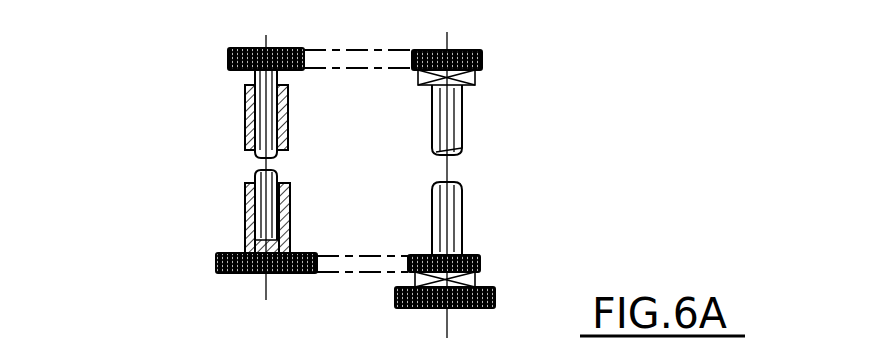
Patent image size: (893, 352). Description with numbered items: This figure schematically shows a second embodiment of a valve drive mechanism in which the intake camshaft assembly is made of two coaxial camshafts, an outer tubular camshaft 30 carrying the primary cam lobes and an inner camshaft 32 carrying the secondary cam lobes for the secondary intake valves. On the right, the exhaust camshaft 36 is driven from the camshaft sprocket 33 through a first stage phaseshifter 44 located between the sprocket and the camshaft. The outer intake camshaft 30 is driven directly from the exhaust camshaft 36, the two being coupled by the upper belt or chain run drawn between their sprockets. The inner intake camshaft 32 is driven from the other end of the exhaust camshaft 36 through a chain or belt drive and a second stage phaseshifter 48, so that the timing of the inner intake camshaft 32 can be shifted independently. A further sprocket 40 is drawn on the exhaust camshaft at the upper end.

The outer intake camshaft 30 is at (180, 132).
The inner intake camshaft 32 is at (175, 235).
The camshaft sprocket 33 is at (393, 298).
The exhaust camshaft 36 is at (432, 110).
The sprocket 40 is at (396, 51).
The first stage phaseshifter 44 is at (483, 280).
The second stage phaseshifter 48 is at (477, 81).